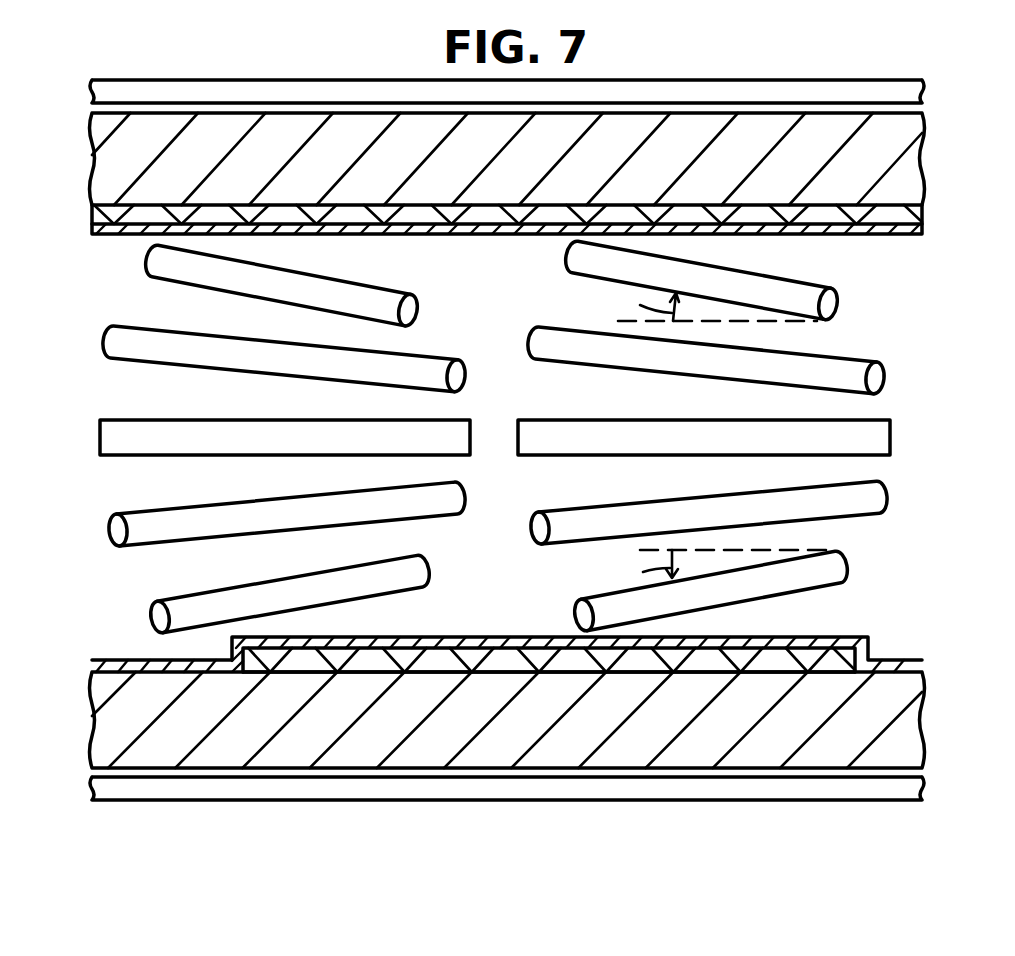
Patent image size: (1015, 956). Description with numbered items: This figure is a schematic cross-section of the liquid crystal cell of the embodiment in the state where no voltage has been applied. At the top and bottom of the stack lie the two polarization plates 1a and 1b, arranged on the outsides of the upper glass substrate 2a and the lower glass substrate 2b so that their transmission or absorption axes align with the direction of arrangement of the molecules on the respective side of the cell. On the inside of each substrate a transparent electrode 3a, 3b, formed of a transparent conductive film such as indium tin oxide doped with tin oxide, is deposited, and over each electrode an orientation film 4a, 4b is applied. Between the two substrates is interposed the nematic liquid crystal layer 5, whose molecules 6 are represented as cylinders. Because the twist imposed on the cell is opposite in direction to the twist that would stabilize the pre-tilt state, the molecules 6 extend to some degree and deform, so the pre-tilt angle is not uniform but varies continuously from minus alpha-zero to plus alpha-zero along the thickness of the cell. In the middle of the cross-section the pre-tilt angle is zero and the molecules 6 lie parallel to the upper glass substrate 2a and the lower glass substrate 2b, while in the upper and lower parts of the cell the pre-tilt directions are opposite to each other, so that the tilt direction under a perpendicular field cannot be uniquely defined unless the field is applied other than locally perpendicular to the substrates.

The polarization plate 1a is at (905, 79).
The upper glass substrate 2a is at (912, 165).
The transparent electrode 3a is at (95, 213).
The orientation film 4a is at (895, 231).
The nematic liquid crystal layer 5 is at (105, 243).
The molecules 6 is at (542, 345).
The transparent electrode 3b is at (458, 662).
The orientation film 4b is at (563, 636).
The lower glass substrate 2b is at (908, 742).
The polarization plate 1b is at (832, 798).